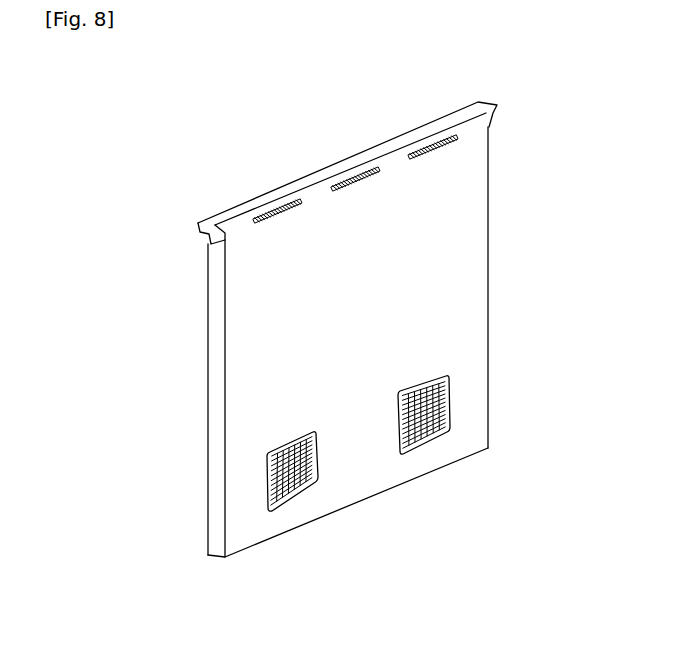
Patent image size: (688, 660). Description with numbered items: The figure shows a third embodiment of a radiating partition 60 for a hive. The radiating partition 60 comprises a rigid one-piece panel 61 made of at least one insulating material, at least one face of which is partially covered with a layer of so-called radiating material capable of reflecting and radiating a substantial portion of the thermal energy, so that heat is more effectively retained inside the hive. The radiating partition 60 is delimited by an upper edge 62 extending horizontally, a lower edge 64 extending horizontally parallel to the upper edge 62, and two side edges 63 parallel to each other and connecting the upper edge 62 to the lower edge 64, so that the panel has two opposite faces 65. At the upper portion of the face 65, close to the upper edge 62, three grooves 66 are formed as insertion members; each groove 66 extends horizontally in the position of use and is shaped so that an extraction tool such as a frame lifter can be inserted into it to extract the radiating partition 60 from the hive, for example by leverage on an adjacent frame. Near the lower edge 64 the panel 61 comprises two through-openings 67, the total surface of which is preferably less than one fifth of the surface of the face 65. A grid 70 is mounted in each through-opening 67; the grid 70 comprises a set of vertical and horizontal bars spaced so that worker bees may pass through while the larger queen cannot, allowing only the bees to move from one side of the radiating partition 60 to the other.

The radiating partition 60 is at (186, 186).
The rigid one-piece panel 61 is at (250, 329).
The upper edge 62 is at (347, 167).
The side edges 63 is at (488, 336).
The lower edge 64 is at (380, 494).
The face 65 is at (448, 291).
The groove 66 is at (278, 211).
The through-opening 67 is at (450, 413).
The grid 70 is at (267, 478).